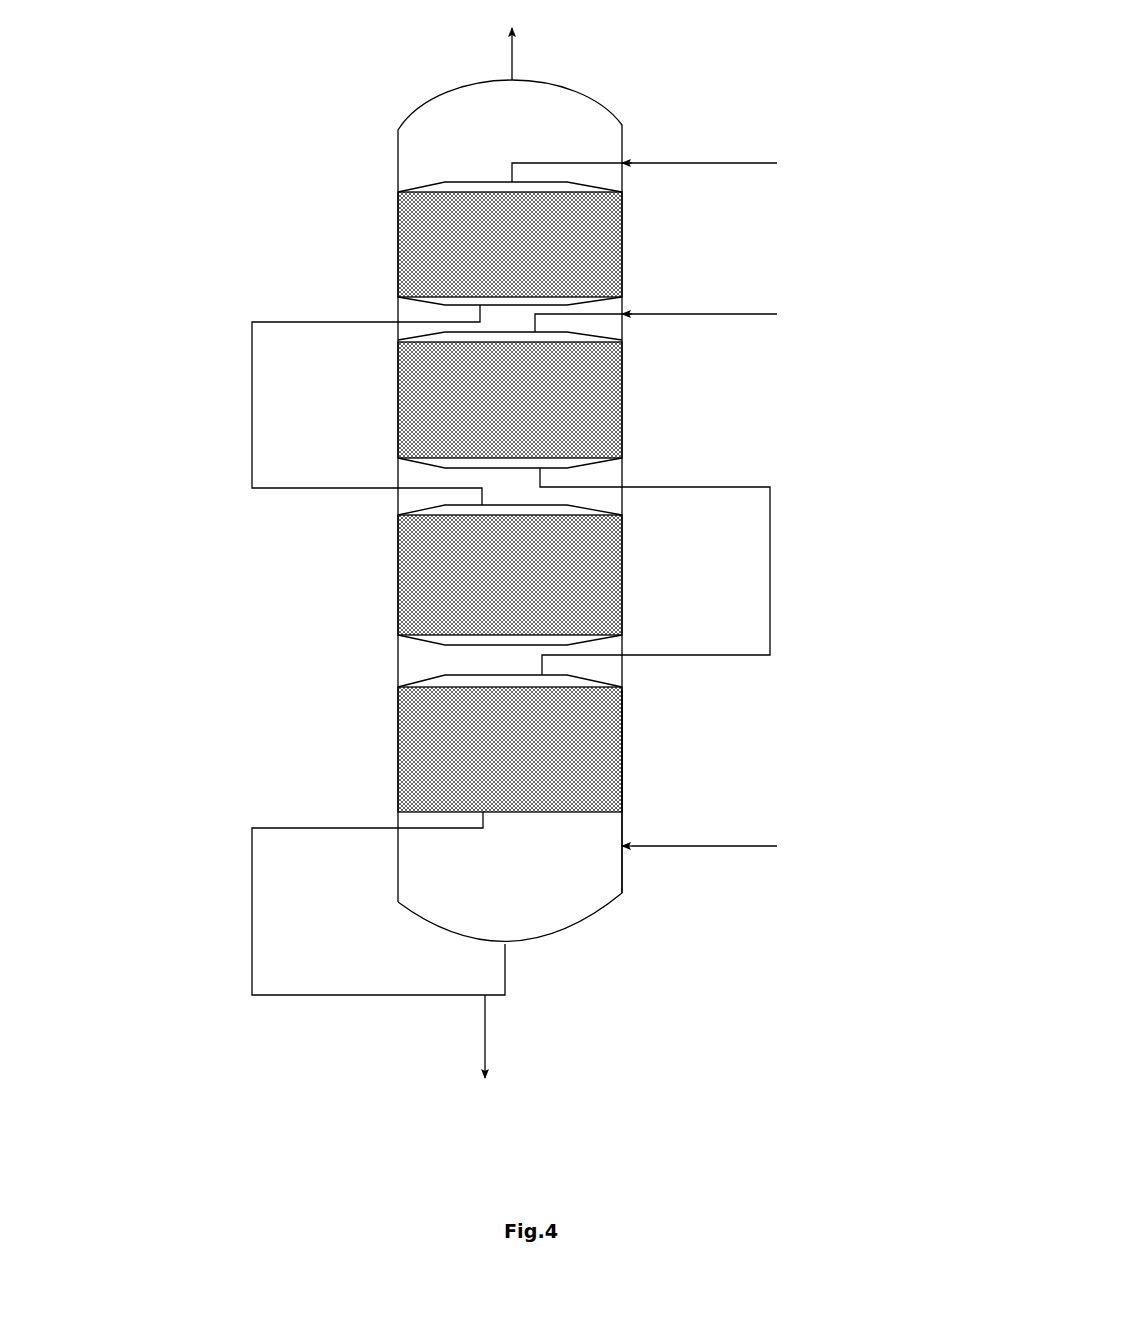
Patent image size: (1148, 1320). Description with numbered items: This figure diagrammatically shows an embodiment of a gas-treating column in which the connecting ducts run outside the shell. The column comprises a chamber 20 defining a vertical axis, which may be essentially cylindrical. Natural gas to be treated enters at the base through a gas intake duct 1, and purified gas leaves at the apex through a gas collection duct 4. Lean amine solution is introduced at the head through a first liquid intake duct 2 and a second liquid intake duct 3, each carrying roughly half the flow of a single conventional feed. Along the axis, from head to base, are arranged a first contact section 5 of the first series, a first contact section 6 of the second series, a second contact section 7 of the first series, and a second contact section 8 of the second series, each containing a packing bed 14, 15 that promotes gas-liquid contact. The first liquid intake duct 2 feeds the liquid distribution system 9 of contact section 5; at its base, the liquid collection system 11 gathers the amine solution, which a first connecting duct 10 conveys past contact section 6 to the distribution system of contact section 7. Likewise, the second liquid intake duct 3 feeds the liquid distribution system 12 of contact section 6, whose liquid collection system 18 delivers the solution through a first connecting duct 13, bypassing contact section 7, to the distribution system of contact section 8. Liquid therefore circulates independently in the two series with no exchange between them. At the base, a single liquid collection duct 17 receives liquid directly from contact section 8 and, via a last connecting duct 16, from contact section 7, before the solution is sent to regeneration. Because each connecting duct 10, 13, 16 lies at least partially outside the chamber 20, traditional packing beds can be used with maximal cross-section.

The gas intake duct 1 is at (693, 842).
The first liquid intake duct 2 is at (705, 157).
The second liquid intake duct 3 is at (708, 313).
The gas collection duct 4 is at (512, 60).
The first contact section of the first series 5 is at (397, 225).
The first contact section of the second series 6 is at (397, 360).
The second contact section of the first series 7 is at (397, 560).
The second contact section of the second series 8 is at (397, 725).
The liquid distribution system 9 is at (443, 185).
The first connecting duct of the first series 10 is at (242, 370).
The liquid collection system 11 is at (555, 302).
The liquid distribution system 12 is at (553, 343).
The first connecting duct of the second series 13 is at (777, 575).
The packing bed 14 is at (467, 235).
The packing bed 15 is at (450, 393).
The last connecting duct 16 is at (340, 823).
The single liquid collection duct 17 is at (492, 1047).
The liquid collection system 18 is at (570, 462).
The chamber 20 is at (640, 727).